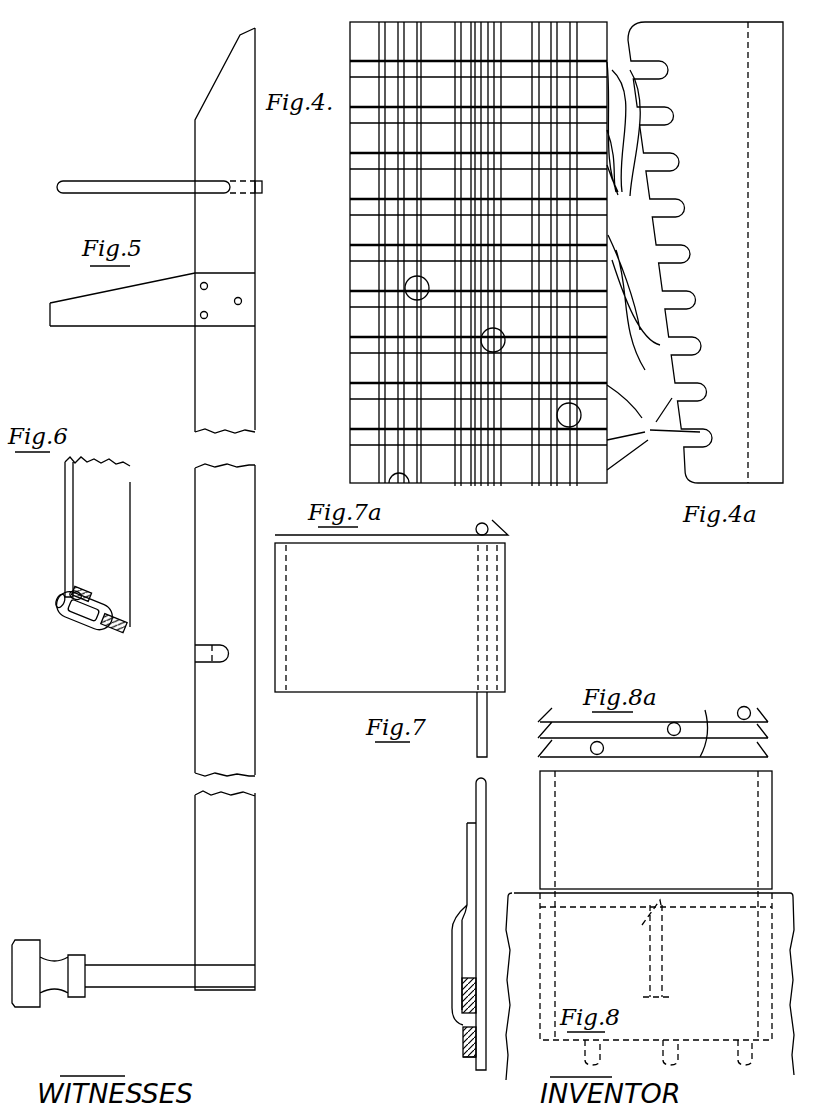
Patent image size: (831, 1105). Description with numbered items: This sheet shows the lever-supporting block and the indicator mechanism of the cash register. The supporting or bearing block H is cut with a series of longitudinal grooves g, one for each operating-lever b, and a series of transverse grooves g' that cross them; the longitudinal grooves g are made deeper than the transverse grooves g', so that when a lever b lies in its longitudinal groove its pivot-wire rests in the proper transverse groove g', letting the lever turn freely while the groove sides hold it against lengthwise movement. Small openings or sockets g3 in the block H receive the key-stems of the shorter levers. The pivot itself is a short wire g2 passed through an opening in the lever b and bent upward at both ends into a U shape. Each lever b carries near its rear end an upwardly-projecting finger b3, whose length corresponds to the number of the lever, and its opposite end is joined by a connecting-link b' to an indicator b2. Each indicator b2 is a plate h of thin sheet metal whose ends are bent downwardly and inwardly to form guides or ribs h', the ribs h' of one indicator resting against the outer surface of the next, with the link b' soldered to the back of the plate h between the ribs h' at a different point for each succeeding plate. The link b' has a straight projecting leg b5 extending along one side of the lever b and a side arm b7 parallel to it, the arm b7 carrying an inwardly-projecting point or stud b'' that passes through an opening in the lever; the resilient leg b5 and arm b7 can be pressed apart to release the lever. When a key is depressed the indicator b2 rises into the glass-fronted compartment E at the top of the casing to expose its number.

In FIG. 4, the supporting or bearing block H is at (456, 252).
In FIG. 4A, the supporting or bearing block H is at (705, 252).
In FIG. 4, the longitudinal grooves g is at (483, 259).
In FIG. 4A, the transverse grooves g' is at (653, 266).
In FIG. 5, the short wire g2 is at (205, 655).
In FIG. 6, the short wire g2 is at (78, 622).
In FIG. 4, the small openings or sockets g3 is at (485, 379).
In FIG. 5, the connecting-links b' is at (159, 172).
In FIG. 7A, the connecting-links b' is at (471, 521).
In FIG. 8A, the connecting-links b' is at (658, 701).
In FIG. 8, the connecting-links b' is at (462, 923).
In FIG. 5, the upwardly-projecting finger b3 is at (152, 299).
In FIG. 7, the plate h is at (409, 647).
In FIG. 8A, the plate h is at (697, 724).
In FIG. 7A, the guides or ribs h' is at (404, 520).
In FIG. 8A, the guides or ribs h' is at (648, 714).
In FIG. 7A, the indicators b2 is at (428, 524).
In FIG. 7, the indicators b2 is at (401, 611).
In FIG. 8, the indicators b2 is at (656, 909).
In FIG. 8, the small case or compartment E is at (650, 967).
In FIG. 8, the straight projecting leg b5 is at (479, 1015).
In FIG. 8, the side arm b7 is at (452, 950).
In FIG. 8, the inwardly-projecting point or stud b'' is at (449, 1042).
In FIG. 8, the operating-levers b is at (453, 1076).